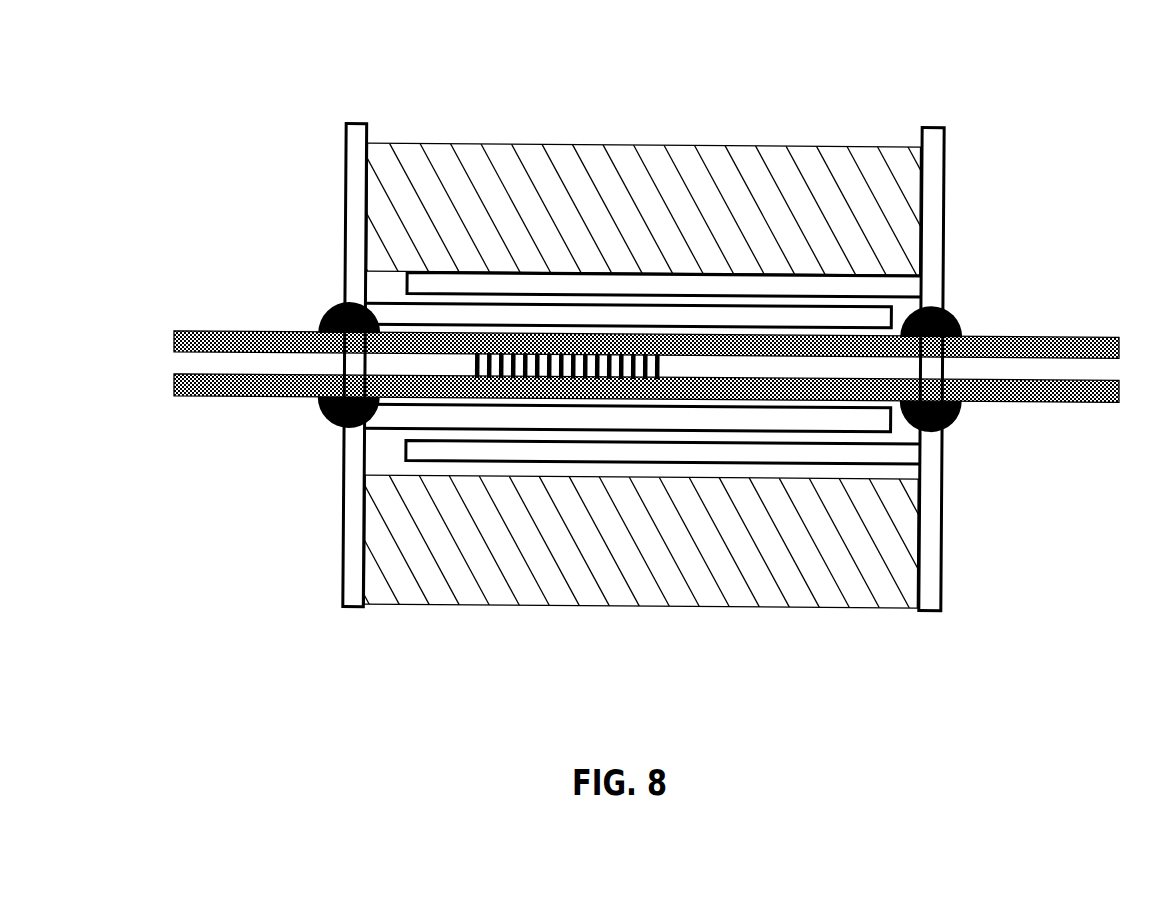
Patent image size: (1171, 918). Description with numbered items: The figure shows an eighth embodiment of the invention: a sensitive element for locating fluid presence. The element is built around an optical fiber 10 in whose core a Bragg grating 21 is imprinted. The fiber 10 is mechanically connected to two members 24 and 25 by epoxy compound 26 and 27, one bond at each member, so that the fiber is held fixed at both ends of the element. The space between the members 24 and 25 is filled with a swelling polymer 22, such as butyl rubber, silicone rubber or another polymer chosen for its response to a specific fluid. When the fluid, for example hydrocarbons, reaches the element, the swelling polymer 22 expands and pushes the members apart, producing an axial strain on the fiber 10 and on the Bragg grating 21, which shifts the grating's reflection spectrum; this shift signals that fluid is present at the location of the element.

The optical fiber 10 is at (1078, 338).
The Bragg grating 21 is at (562, 345).
The swelling polymer 22 is at (731, 530).
The member 24 is at (343, 555).
The member 25 is at (940, 557).
The epoxy compound 26 is at (320, 333).
The epoxy compound 27 is at (957, 337).